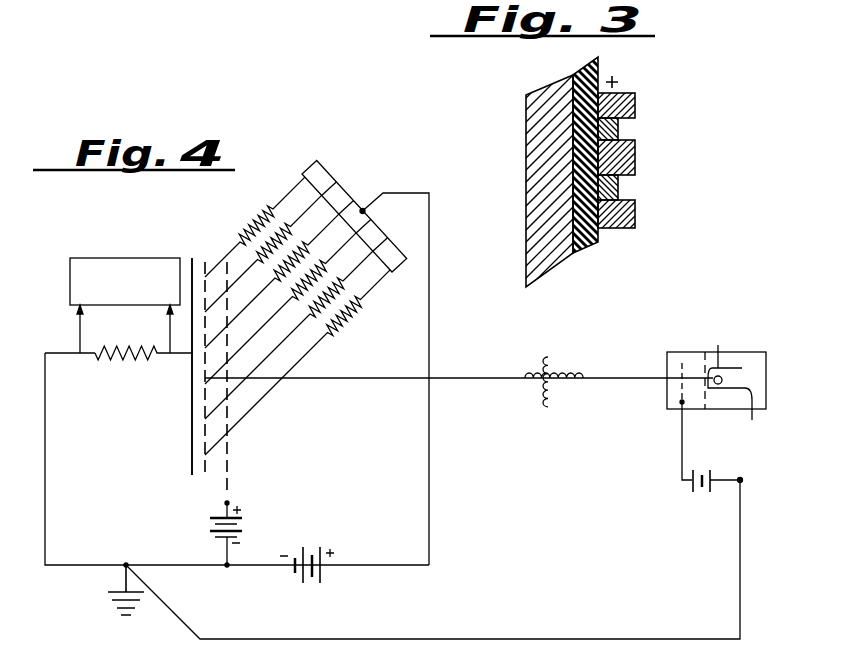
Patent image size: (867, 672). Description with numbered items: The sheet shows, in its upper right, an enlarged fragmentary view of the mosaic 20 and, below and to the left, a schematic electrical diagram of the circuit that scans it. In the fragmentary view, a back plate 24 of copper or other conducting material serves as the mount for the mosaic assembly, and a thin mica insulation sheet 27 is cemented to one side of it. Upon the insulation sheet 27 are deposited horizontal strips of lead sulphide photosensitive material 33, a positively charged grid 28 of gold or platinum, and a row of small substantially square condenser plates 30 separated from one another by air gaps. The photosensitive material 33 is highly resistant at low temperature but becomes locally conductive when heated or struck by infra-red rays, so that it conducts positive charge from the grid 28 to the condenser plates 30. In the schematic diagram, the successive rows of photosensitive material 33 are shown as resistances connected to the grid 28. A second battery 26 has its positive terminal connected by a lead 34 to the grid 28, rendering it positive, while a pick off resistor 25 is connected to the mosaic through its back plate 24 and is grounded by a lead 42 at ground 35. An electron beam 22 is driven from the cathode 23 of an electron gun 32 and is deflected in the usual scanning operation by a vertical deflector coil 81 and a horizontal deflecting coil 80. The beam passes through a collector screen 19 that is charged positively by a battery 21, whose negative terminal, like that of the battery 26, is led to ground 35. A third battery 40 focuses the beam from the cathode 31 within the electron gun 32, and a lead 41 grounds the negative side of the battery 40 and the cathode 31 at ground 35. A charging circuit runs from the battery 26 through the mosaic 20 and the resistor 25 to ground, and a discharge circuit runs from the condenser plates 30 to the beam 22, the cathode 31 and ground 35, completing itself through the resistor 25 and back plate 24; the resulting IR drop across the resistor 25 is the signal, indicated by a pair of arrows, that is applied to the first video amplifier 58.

In FIG. 4, the collector screen 19 is at (228, 457).
In FIG. 4, the mosaic 20 is at (201, 253).
In FIG. 4, the battery 21 is at (243, 521).
In FIG. 4, the electron beam 22 is at (361, 371).
In FIG. 4, the cathode 23 is at (752, 420).
In FIG. 3, the back plate 24 is at (526, 158).
In FIG. 4, the back plate 24 is at (187, 433).
In FIG. 4, the pick off resistor 25 is at (140, 343).
In FIG. 4, the second battery 26 is at (316, 583).
In FIG. 3, the insulation sheet 27 is at (598, 240).
In FIG. 3, the positive grid 28 is at (636, 110).
In FIG. 4, the positive grid 28 is at (364, 212).
In FIG. 3, the condenser plates 30 is at (636, 162).
In FIG. 4, the condenser plates 30 is at (203, 455).
In FIG. 4, the cathode 31 is at (718, 347).
In FIG. 4, the electron gun 32 is at (778, 343).
In FIG. 3, the photosensitive material 33 is at (619, 132).
In FIG. 4, the photosensitive material 33 is at (256, 211).
In FIG. 4, the lead 34 is at (431, 256).
In FIG. 4, the ground 35 is at (122, 617).
In FIG. 4, the third battery 40 is at (690, 493).
In FIG. 4, the lead 41 is at (470, 640).
In FIG. 4, the lead 42 is at (45, 497).
In FIG. 4, the first video amplifier 58 is at (70, 292).
In FIG. 4, the horizontal deflecting coil 80 is at (577, 374).
In FIG. 4, the vertical deflector coil 81 is at (548, 357).